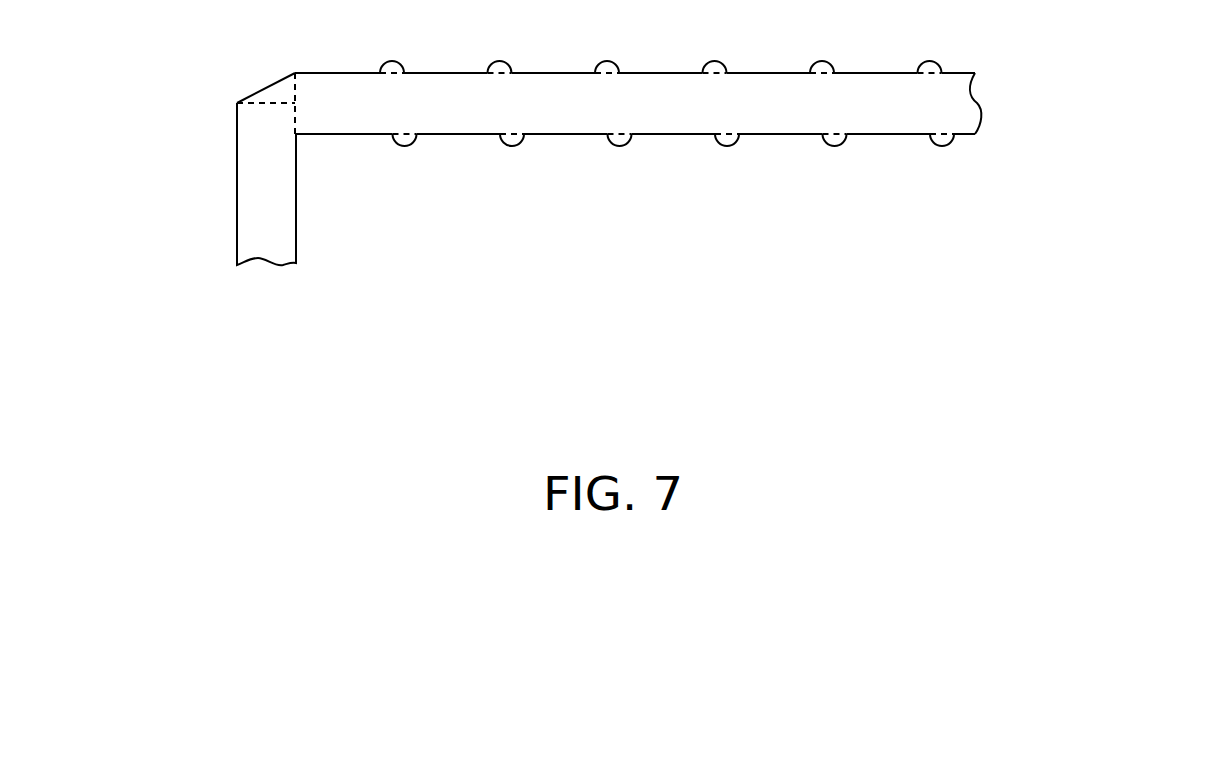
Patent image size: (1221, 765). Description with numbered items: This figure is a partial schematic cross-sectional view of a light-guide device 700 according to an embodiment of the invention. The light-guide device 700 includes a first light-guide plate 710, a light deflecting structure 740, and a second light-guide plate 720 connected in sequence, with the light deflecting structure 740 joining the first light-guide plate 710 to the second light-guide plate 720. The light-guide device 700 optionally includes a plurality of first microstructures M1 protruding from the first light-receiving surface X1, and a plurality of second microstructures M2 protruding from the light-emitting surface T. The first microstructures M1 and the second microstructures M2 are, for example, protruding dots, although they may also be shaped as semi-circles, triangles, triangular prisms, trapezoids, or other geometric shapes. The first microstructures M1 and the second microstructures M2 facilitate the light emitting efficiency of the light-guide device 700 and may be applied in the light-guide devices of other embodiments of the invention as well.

The light-guide device 700 is at (1183, 440).
The first light-guide plate 710 is at (955, 103).
The second light-guide plate 720 is at (258, 193).
The light deflecting structure 740 is at (274, 98).
The light-emitting surface T is at (358, 73).
The first microstructures M1 is at (728, 134).
The second microstructures M2 is at (499, 70).
The first light-receiving surface X1 is at (446, 136).